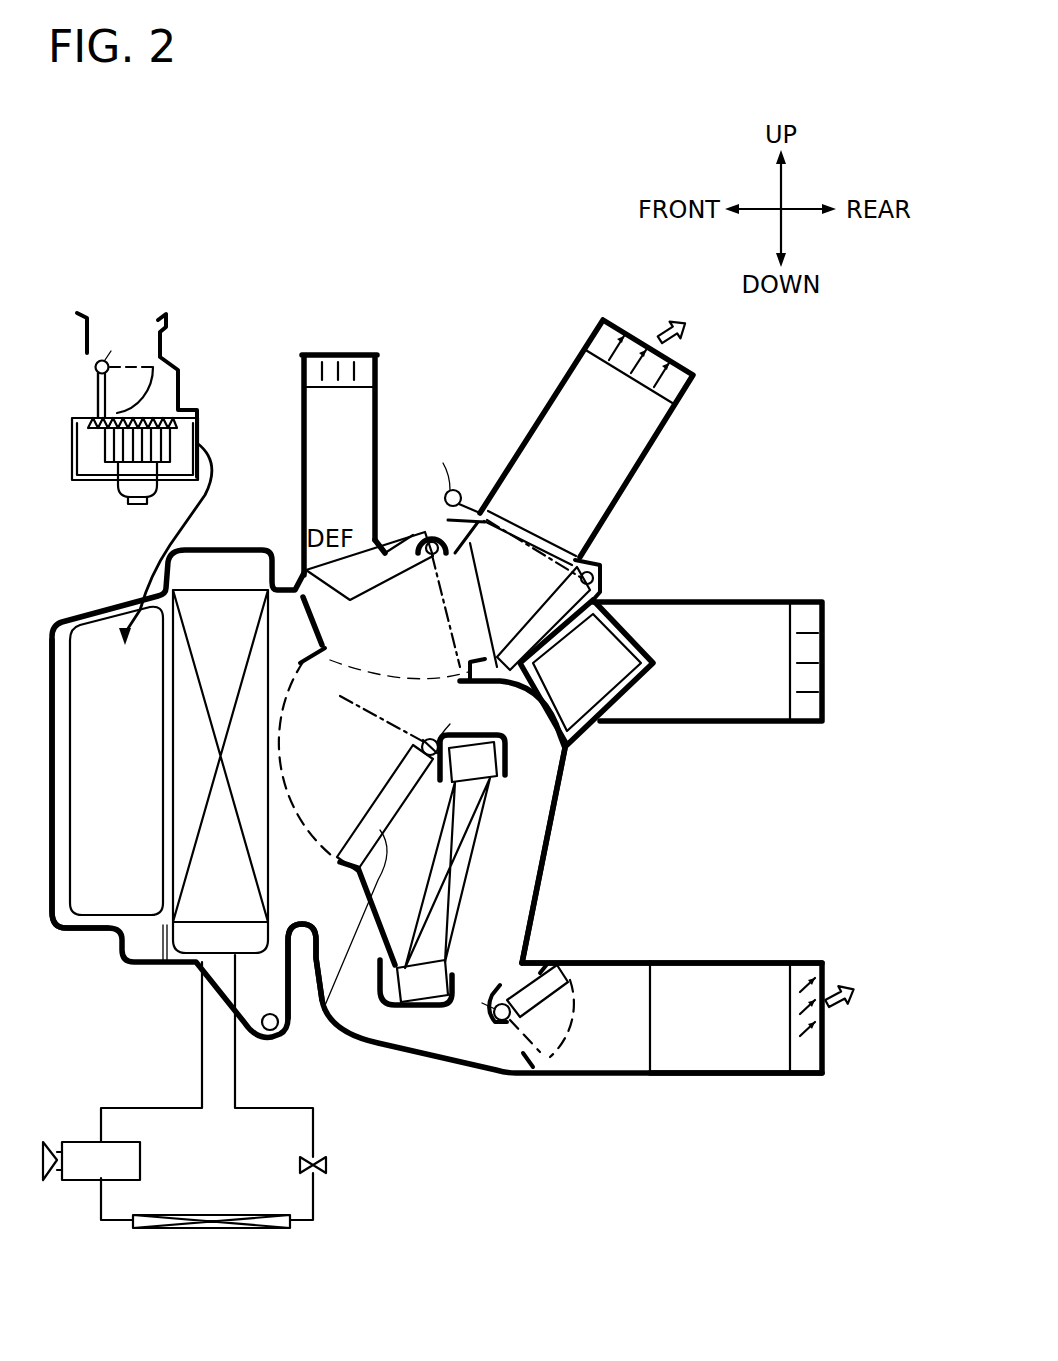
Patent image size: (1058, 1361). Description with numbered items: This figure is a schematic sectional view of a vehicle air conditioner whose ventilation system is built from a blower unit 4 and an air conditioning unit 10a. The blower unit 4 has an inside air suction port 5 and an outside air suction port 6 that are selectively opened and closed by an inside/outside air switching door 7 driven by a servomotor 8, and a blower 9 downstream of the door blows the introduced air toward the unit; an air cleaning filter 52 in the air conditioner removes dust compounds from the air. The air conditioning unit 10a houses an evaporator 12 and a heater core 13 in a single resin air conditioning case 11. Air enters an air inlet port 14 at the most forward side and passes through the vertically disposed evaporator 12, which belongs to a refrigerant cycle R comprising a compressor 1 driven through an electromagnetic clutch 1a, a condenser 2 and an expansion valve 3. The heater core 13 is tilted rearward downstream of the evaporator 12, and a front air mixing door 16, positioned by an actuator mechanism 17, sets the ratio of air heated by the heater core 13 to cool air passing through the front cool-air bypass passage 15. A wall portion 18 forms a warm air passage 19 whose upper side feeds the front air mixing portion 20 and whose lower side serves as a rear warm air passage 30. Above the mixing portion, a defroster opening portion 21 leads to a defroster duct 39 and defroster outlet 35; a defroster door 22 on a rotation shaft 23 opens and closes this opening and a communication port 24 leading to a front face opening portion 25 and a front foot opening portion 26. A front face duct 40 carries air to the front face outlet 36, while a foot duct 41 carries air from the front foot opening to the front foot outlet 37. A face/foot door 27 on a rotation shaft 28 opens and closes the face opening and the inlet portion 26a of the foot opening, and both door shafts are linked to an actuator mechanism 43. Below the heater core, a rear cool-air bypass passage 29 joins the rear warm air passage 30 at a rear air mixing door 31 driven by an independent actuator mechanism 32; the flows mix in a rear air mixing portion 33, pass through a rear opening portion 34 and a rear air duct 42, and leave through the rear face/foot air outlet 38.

The compressor 1 is at (116, 1174).
The electromagnetic clutch 1a is at (52, 1142).
The condenser 2 is at (215, 1215).
The expansion valve 3 is at (326, 1165).
The blower unit 4 is at (199, 375).
The inside air suction port 5 is at (80, 386).
The outside air suction port 6 is at (123, 325).
The inside/outside air switching door 7 is at (87, 402).
The servomotor 8 is at (95, 364).
The blower 9 is at (119, 490).
The air conditioning unit 10a is at (258, 548).
The air conditioning case 11 is at (100, 932).
The evaporator 12 is at (190, 905).
The heater core 13 is at (410, 1008).
The air inlet port 14 is at (98, 779).
The front cool-air bypass passage 15 is at (341, 681).
The front air mixing door 16 is at (322, 977).
The actuator mechanism 17 is at (482, 821).
The wall portion 18 is at (563, 846).
The warm air passage 19 is at (479, 894).
The front air mixing portion 20 is at (408, 716).
The defroster opening portion 21 is at (357, 560).
The defroster door 22 is at (397, 548).
The rotation shaft 23 is at (432, 540).
The communication port 24 is at (451, 611).
The front face opening portion 25 is at (527, 527).
The front foot opening portion 26 is at (640, 660).
The inlet portion 26a is at (623, 627).
The face/foot door 27 is at (600, 588).
The rotation shaft 28 is at (596, 570).
The rear cool-air bypass passage 29 is at (449, 1046).
The rear warm air passage 30 is at (486, 984).
The rear air mixing door 31 is at (577, 964).
The actuator mechanism 32 is at (520, 1060).
The rear air mixing portion 33 is at (596, 1031).
The rear opening portion 34 is at (622, 961).
The defroster outlet 35 is at (350, 362).
The front face outlet 36 is at (642, 345).
The front foot outlet 37 is at (808, 608).
The rear face/foot air outlet 38 is at (810, 968).
The defroster duct 39 is at (300, 442).
The front face duct 40 is at (549, 406).
The foot duct 41 is at (757, 600).
The rear air duct 42 is at (713, 960).
The actuator mechanism 43 is at (459, 491).
The air cleaning filter 52 is at (162, 418).
The refrigerant cycle R is at (157, 1108).